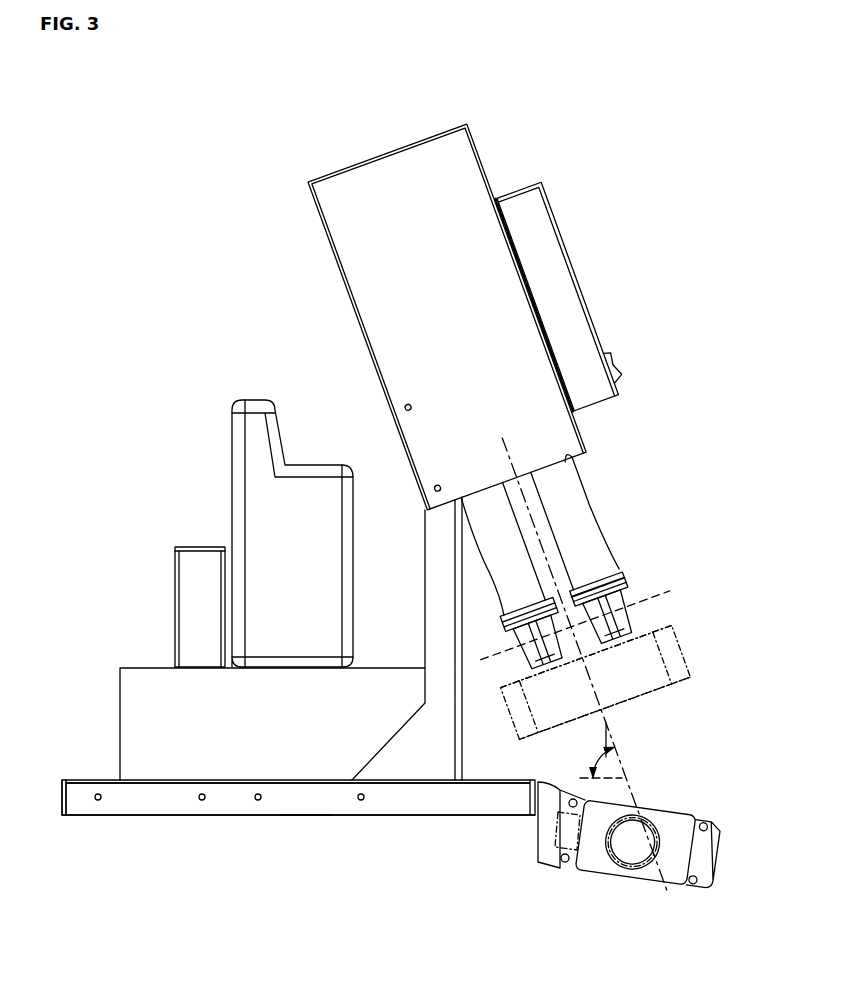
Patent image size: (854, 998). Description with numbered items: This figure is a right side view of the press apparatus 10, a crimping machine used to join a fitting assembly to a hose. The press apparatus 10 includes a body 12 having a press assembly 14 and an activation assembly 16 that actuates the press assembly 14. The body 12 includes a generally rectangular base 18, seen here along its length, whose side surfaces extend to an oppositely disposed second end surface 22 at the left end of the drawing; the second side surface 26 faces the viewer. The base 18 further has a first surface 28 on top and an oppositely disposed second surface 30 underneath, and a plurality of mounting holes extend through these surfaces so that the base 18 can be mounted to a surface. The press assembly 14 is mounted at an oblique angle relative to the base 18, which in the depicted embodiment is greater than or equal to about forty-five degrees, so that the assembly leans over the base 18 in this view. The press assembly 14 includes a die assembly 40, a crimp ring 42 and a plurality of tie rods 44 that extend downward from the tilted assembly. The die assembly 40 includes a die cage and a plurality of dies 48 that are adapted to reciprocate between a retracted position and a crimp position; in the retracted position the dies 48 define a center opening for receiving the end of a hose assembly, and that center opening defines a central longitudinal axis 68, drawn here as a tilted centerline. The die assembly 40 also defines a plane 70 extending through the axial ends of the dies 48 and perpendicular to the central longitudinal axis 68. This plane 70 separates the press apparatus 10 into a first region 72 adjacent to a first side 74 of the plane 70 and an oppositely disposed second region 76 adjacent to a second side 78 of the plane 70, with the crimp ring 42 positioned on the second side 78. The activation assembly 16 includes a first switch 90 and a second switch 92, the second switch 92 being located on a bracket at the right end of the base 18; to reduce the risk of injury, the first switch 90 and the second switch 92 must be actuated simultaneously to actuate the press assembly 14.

The press apparatus 10 is at (112, 267).
The body 12 is at (213, 450).
The press assembly 14 is at (660, 290).
The activation assembly 16 is at (560, 888).
The base 18 is at (125, 832).
The second end surface 22 is at (62, 790).
The second side surface 26 is at (305, 800).
The first surface 28 is at (297, 780).
The second surface 30 is at (357, 815).
The die assembly 40 is at (627, 585).
The crimp ring 42 is at (690, 658).
The tie rods 44 is at (557, 522).
The dies 48 is at (628, 597).
The central longitudinal axis 68 is at (612, 738).
The plane 70 is at (660, 598).
The first region 72 is at (618, 440).
The first side 74 is at (488, 653).
The second region 76 is at (674, 698).
The second side 78 is at (512, 650).
The first switch 90 is at (622, 363).
The second switch 92 is at (617, 880).